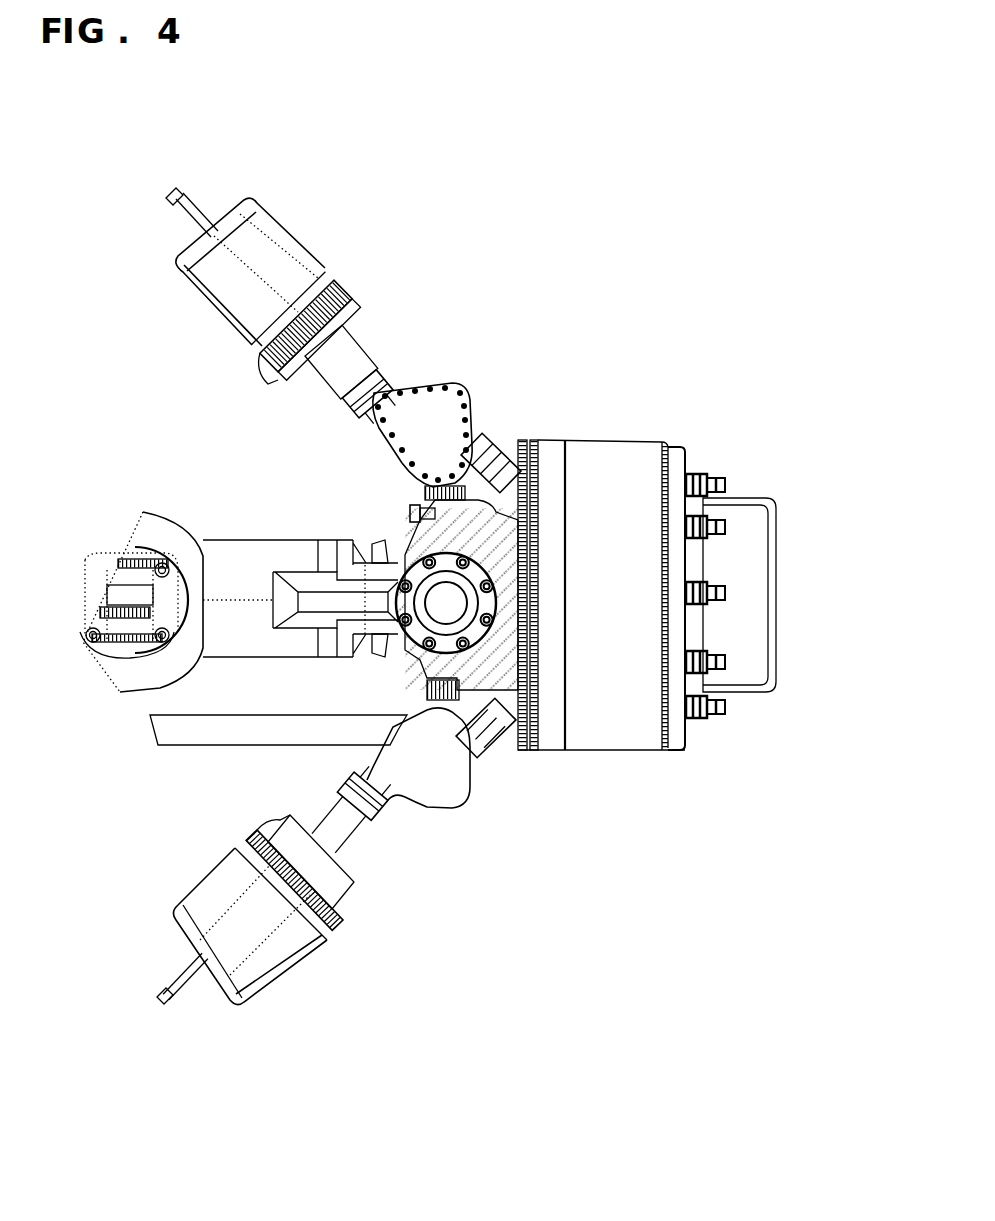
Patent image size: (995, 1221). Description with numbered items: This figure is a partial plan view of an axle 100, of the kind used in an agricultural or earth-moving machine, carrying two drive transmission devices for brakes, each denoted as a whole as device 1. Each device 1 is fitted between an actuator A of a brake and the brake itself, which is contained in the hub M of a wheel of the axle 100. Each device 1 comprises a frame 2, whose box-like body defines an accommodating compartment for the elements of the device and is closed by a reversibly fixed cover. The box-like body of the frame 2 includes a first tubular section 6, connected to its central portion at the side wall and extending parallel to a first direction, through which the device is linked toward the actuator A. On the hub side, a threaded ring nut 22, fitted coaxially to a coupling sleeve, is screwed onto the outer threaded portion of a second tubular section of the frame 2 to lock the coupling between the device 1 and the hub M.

The axle 100 is at (509, 904).
The drive transmission device 1 is at (483, 797).
The hub M is at (648, 708).
The frame 2 is at (438, 382).
The threaded ring nut 22 is at (478, 461).
The first tubular section 6 is at (350, 411).
The actuator A is at (308, 229).